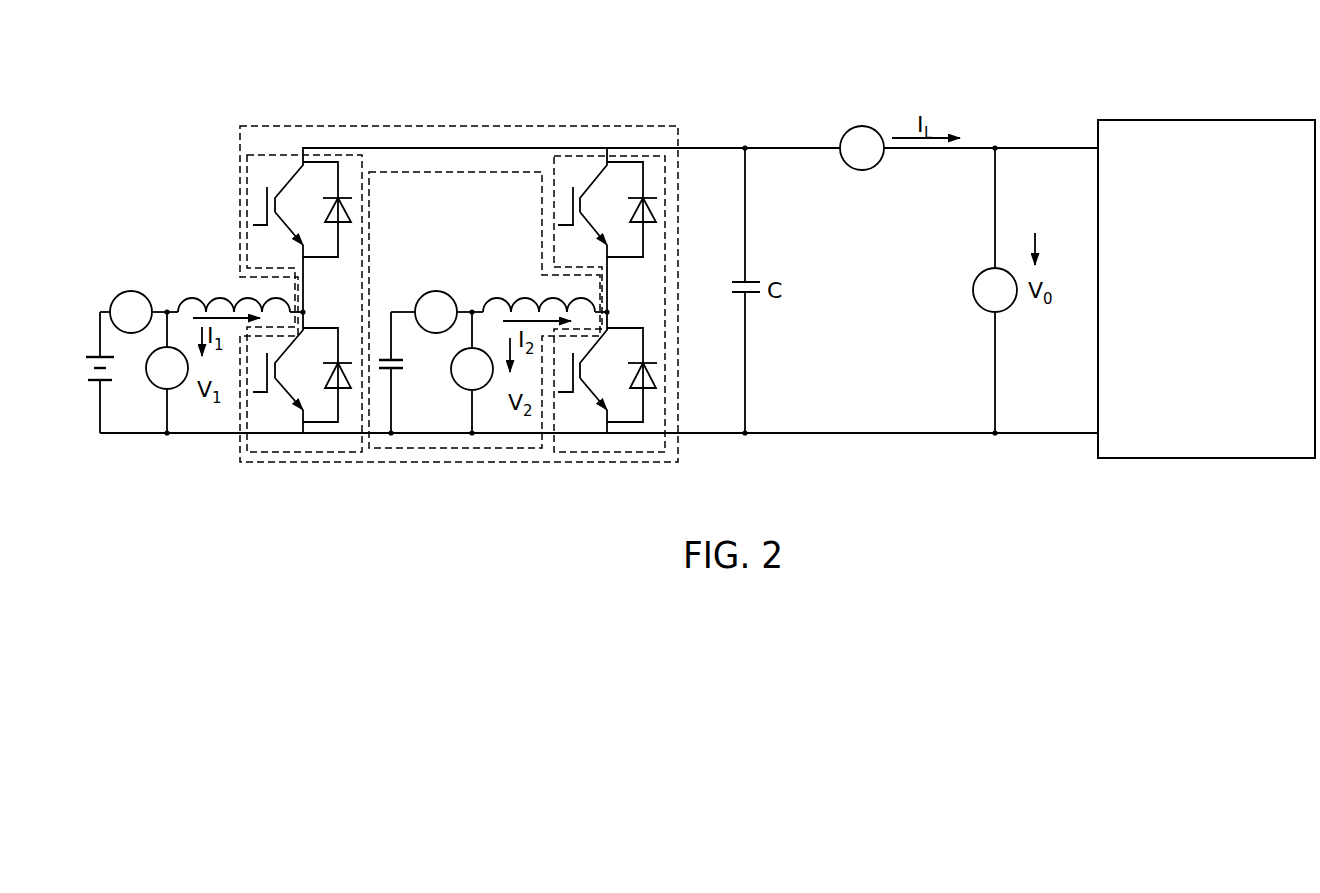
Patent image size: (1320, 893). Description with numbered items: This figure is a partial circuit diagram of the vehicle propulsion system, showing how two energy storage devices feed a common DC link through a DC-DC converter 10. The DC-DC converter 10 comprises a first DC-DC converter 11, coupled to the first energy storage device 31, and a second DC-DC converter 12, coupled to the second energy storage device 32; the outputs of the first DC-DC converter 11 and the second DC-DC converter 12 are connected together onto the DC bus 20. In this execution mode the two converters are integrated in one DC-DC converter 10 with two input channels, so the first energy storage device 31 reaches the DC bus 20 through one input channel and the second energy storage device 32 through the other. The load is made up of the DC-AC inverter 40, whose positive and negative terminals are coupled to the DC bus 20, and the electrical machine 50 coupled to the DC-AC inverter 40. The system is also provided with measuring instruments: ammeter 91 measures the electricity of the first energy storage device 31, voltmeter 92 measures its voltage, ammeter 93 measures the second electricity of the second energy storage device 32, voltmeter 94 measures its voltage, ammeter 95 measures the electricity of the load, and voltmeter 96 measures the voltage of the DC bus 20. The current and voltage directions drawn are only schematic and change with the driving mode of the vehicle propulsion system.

The DC-DC converter 10 is at (440, 146).
The first DC-DC converter 11 is at (193, 297).
The second DC-DC converter 12 is at (498, 298).
The DC bus 20 is at (707, 150).
The first energy storage device 31 is at (90, 356).
The second energy storage device 32 is at (405, 372).
The DC-AC inverter 40 is at (1206, 258).
The electrical machine 50 is at (1217, 118).
The ammeter 91 is at (130, 290).
The voltmeter 92 is at (151, 382).
The ammeter 93 is at (438, 290).
The voltmeter 94 is at (450, 370).
The ammeter 95 is at (863, 126).
The voltmeter 96 is at (973, 289).